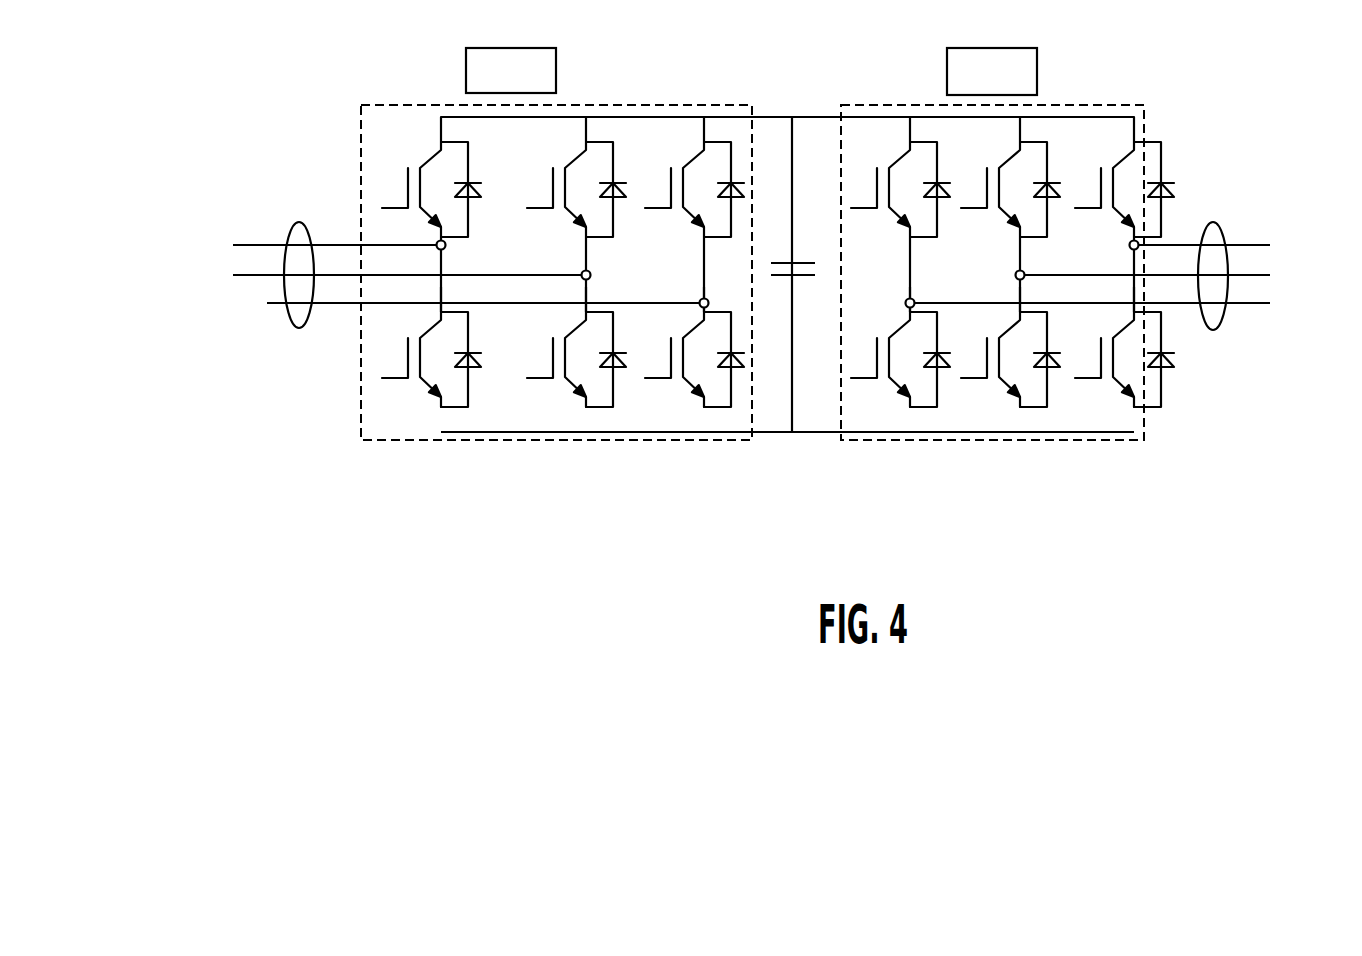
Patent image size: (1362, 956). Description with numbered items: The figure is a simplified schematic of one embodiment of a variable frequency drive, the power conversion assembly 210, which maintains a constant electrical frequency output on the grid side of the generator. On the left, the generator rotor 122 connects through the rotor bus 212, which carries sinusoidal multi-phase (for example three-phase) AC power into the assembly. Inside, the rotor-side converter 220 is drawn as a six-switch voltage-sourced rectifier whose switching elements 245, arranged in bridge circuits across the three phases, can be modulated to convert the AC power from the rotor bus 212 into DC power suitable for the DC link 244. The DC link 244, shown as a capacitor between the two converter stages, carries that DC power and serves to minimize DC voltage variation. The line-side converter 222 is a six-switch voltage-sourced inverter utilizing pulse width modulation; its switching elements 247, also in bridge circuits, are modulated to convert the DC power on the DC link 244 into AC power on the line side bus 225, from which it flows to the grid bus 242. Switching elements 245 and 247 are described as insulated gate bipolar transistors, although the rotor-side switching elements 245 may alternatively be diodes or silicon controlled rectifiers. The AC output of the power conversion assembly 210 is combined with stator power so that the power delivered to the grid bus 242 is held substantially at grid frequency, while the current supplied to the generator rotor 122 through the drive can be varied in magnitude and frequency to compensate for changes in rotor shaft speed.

The power conversion assembly 210 is at (1188, 83).
The rotor bus 212 is at (299, 328).
The rotor-side converter 220 is at (467, 441).
The line-side converter 222 is at (1080, 441).
The line side bus 225 is at (1210, 222).
The grid bus 242 is at (1322, 323).
The DC link 244 is at (813, 142).
The switching elements 245 is at (698, 391).
The switching elements 247 is at (984, 379).
The generator rotor 122 is at (188, 328).